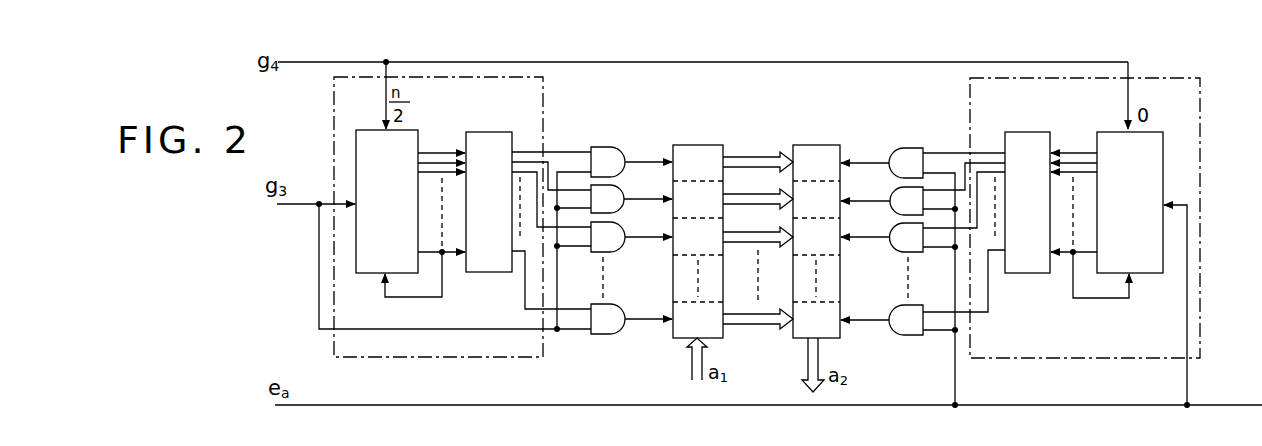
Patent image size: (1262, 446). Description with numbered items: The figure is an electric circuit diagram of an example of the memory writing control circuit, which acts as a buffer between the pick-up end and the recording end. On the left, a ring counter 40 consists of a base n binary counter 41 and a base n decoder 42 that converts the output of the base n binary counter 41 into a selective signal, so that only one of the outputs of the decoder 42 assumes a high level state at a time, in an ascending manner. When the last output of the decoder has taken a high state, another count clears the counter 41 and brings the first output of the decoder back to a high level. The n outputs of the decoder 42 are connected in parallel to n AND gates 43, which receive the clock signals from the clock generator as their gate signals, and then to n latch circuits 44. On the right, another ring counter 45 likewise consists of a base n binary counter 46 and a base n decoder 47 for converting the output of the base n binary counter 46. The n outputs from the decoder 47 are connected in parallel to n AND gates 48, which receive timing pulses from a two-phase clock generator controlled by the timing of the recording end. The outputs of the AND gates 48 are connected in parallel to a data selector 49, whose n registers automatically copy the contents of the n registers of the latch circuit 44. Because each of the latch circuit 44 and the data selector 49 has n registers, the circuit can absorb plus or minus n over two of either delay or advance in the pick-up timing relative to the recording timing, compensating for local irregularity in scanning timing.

The ring counter 40 is at (590, 99).
The base n binary counter 41 is at (365, 273).
The base n decoder 42 is at (488, 272).
The AND gates 43 is at (641, 129).
The latch circuits 44 is at (688, 144).
The ring counter 45 is at (1204, 152).
The base n binary counter 46 is at (1150, 273).
The base n decoder 47 is at (1028, 273).
The AND gates 48 is at (940, 129).
The data selector 49 is at (853, 129).